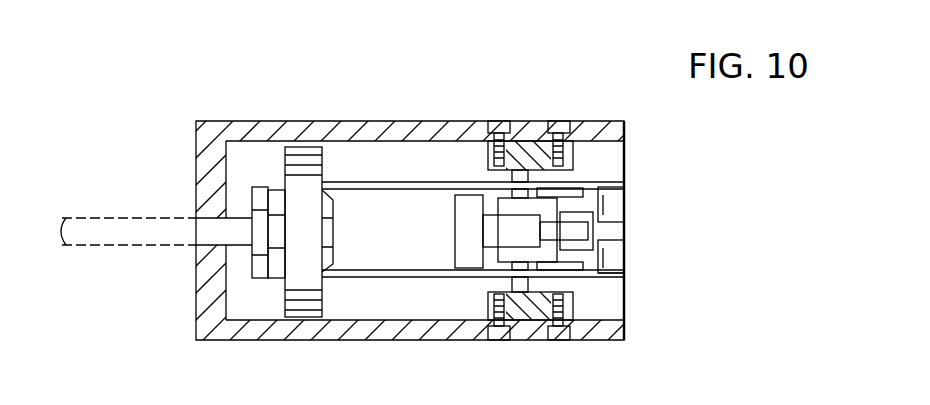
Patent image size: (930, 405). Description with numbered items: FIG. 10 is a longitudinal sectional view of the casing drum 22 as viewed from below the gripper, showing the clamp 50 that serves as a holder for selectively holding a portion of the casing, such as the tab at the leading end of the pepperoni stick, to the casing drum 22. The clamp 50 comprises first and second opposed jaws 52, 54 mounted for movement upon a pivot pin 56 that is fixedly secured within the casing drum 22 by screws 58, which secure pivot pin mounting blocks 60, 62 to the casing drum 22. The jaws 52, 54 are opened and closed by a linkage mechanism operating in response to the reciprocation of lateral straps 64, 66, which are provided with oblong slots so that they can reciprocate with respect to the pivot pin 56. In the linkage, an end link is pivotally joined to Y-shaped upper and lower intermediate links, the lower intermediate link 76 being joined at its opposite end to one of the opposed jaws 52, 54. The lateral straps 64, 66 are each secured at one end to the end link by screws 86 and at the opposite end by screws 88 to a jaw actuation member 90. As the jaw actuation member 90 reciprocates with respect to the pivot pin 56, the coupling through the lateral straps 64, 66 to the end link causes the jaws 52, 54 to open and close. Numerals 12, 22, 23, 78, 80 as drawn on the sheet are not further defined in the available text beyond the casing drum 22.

The housing 12 is at (619, 256).
The casing drum 22 is at (232, 96).
The direction of movement 23 is at (122, 229).
The jaw actuation member 90 is at (252, 232).
The screws 88 is at (258, 187).
The wheel 78 is at (313, 318).
The hub 80 is at (334, 204).
The lateral strap 64 is at (421, 183).
The pivot pin 56 is at (500, 176).
The pivot pin mounting block 62 is at (485, 302).
The pivot pin mounting block 60 is at (492, 167).
The screws 58 is at (556, 121).
The second opposed jaw 54 is at (456, 238).
The first opposed jaw 52 is at (574, 200).
The lower intermediate link 76 is at (608, 229).
The screws 86 is at (613, 181).
The lateral strap 66 is at (617, 283).
The clamp 50 is at (668, 226).